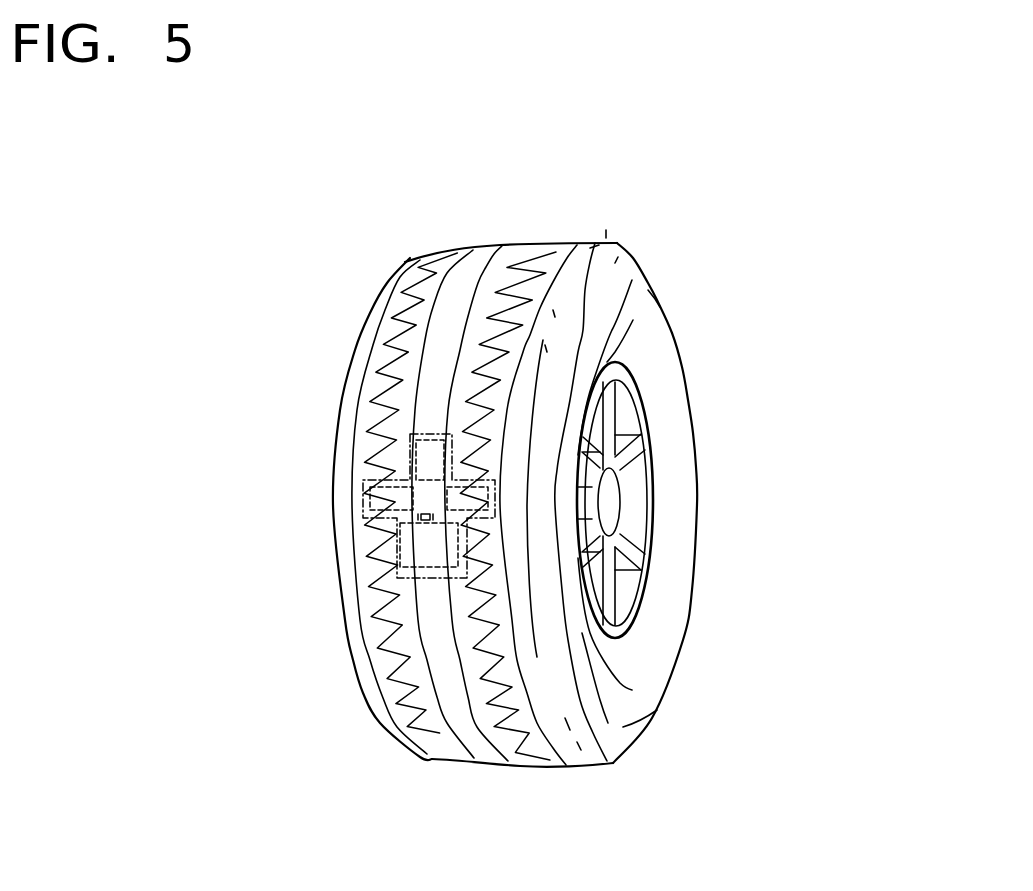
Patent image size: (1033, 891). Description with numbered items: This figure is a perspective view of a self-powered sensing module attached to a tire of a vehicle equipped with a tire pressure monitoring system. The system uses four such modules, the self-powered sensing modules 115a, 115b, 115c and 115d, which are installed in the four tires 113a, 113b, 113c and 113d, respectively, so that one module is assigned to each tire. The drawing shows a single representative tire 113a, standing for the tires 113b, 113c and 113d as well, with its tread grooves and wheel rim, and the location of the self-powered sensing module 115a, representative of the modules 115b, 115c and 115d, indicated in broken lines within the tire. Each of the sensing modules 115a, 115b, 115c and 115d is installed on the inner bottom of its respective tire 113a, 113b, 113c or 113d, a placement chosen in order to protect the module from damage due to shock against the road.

The tire 113a is at (618, 492).
The tire 113b is at (618, 492).
The tire 113c is at (618, 492).
The tire 113d is at (628, 251).
The self-powered sensing module 115a is at (281, 506).
The self-powered sensing module 115b is at (281, 506).
The self-powered sensing module 115c is at (281, 506).
The self-powered sensing module 115d is at (364, 483).